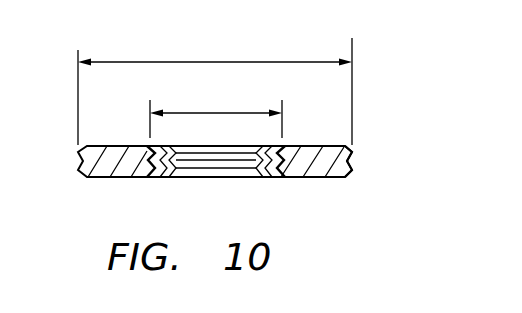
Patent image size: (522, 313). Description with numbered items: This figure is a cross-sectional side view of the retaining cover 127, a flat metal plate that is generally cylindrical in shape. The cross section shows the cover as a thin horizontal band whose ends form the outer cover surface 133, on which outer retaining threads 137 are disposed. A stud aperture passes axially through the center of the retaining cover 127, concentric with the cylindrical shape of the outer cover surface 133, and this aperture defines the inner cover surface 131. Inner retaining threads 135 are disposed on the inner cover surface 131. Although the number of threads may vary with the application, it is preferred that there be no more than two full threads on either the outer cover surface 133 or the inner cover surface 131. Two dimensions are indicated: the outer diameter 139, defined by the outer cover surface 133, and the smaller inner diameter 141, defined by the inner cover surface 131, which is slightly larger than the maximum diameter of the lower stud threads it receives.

The retaining cover 127 is at (315, 195).
The inner cover surface 131 is at (198, 169).
The outer cover surface 133 is at (80, 171).
The inner retaining threads 135 is at (265, 178).
The outer retaining threads 137 is at (352, 171).
The outer diameter 139 is at (177, 62).
The inner diameter 141 is at (223, 113).